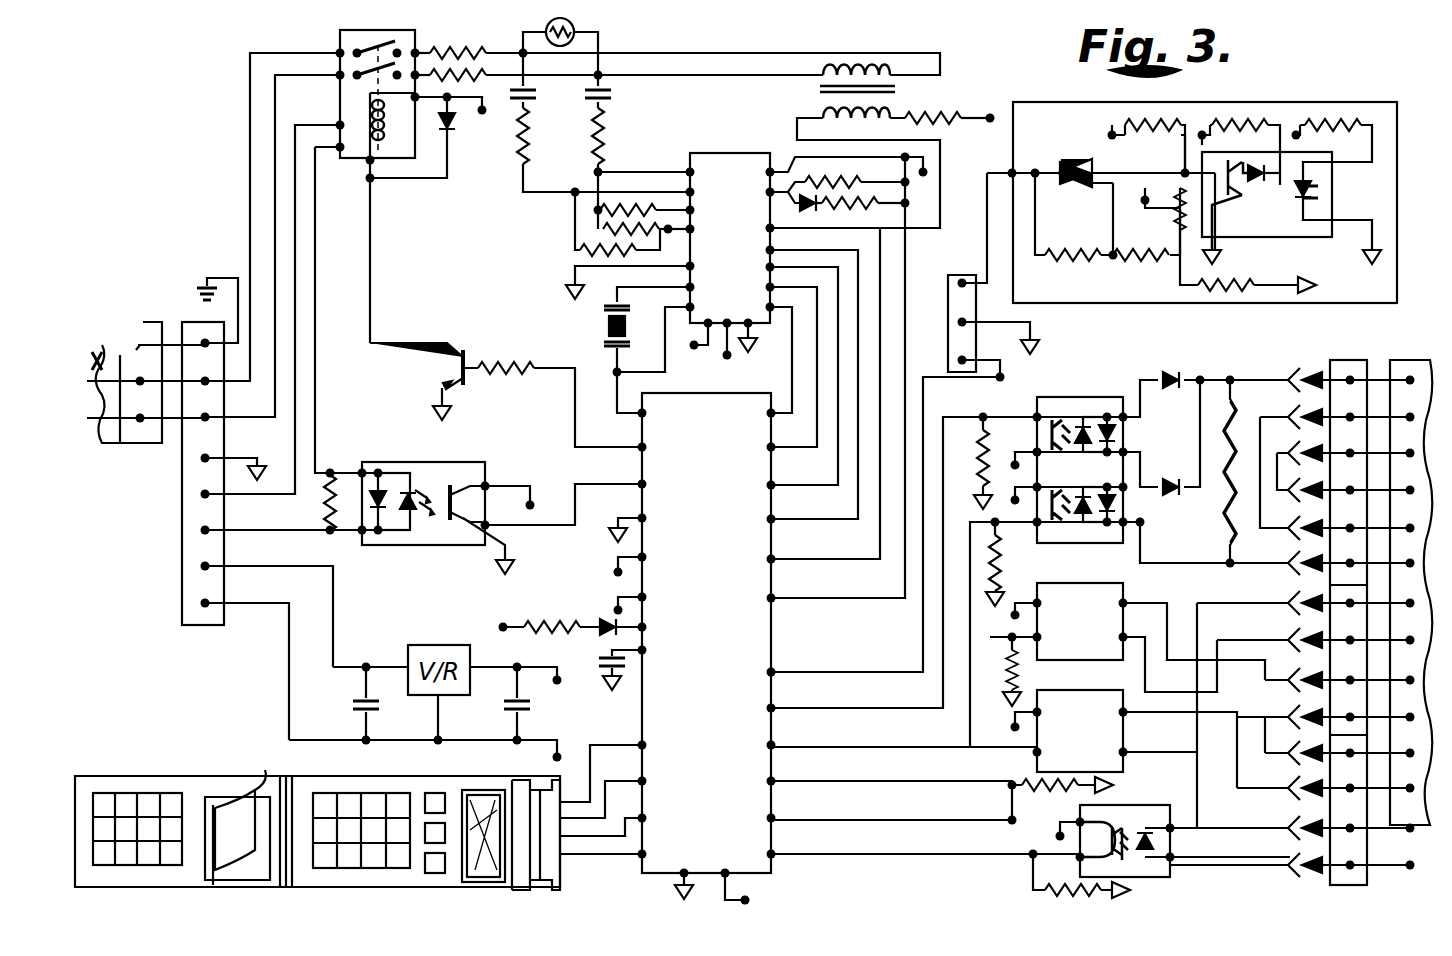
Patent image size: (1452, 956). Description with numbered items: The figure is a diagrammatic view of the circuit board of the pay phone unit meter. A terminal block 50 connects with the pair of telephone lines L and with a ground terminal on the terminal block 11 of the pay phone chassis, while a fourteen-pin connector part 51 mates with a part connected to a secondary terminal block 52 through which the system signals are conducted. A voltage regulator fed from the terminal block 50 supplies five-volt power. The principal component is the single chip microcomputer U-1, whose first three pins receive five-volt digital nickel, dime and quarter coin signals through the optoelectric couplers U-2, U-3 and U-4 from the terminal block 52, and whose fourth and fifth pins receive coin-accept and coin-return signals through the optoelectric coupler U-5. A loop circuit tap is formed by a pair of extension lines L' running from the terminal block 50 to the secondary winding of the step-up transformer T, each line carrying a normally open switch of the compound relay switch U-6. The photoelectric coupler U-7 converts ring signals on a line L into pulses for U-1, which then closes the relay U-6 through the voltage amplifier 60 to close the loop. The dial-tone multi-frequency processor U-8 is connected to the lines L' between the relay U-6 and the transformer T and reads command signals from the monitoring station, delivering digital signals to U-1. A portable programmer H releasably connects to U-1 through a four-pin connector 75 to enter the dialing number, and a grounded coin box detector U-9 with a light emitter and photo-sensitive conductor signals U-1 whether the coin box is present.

The terminal block 11 is at (140, 443).
The terminal block 50 is at (182, 545).
The multi-pin connector part 51 is at (1346, 360).
The secondary terminal block 52 is at (1422, 360).
The voltage amplifier 60 is at (468, 352).
The 4-pin connector 75 is at (538, 775).
The portable manually operable programmer H is at (365, 775).
The telephone lines L is at (117, 335).
The telephone line extension lines L' is at (713, 123).
The step-up transformer T is at (918, 86).
The single chip microcomputer U-1 is at (637, 649).
The optoelectric coupler U-2 is at (1175, 878).
The optoelectric coupler U-3 is at (1096, 684).
The optoelectric coupler U-4 is at (1096, 576).
The optoelectric coupler U-5 is at (1094, 388).
The compound relay switch U-6 is at (420, 38).
The photoelectric coupler U-7 is at (368, 462).
The dial-tone multi-frequency processor U-8 is at (747, 164).
The coin box detector U-9 is at (1245, 240).